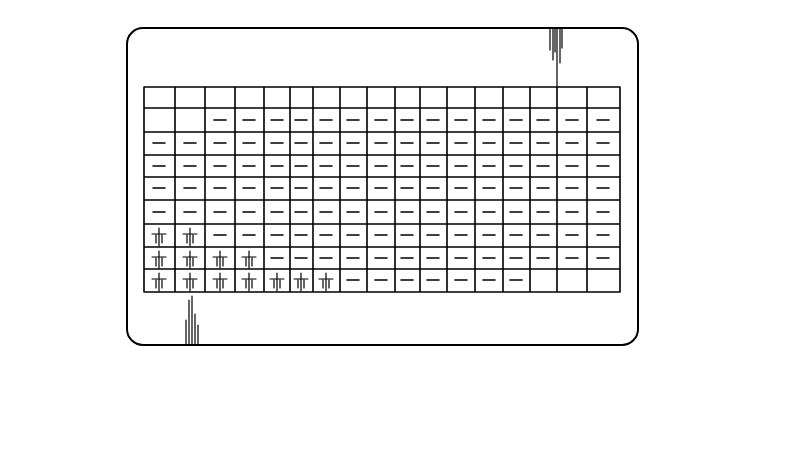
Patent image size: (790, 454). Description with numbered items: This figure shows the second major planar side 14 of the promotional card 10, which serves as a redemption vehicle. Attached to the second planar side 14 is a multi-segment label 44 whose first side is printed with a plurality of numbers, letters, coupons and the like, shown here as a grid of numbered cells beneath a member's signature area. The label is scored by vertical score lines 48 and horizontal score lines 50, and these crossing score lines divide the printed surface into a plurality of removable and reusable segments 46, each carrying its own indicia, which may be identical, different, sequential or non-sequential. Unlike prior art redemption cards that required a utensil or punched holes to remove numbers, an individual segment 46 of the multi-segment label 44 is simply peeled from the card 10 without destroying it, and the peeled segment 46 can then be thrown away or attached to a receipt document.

The promotional card 10 is at (118, 165).
The second major planar side 14 is at (630, 65).
The multi-segment label 44 is at (457, 298).
The removable and reusable segments 46 is at (148, 96).
The vertical score lines 48 is at (335, 87).
The horizontal score lines 50 is at (616, 193).